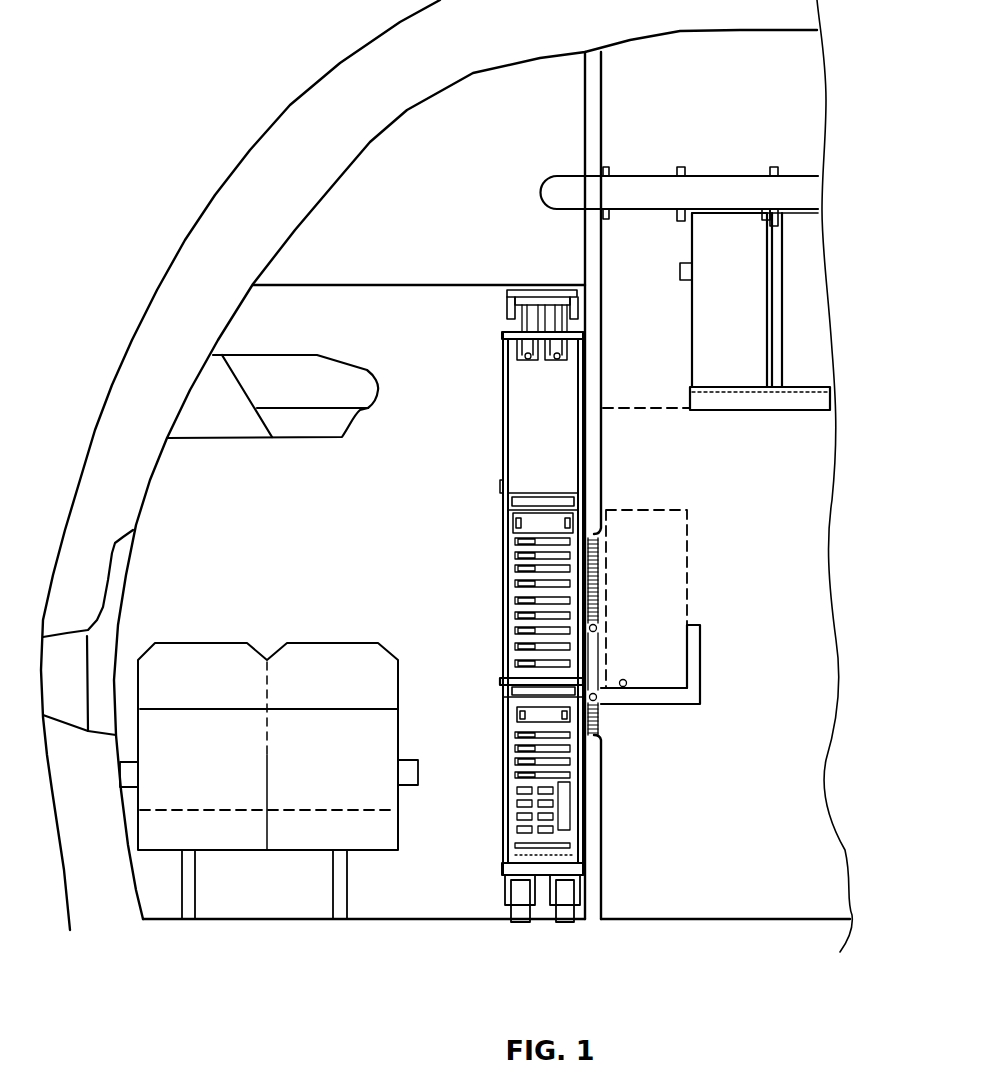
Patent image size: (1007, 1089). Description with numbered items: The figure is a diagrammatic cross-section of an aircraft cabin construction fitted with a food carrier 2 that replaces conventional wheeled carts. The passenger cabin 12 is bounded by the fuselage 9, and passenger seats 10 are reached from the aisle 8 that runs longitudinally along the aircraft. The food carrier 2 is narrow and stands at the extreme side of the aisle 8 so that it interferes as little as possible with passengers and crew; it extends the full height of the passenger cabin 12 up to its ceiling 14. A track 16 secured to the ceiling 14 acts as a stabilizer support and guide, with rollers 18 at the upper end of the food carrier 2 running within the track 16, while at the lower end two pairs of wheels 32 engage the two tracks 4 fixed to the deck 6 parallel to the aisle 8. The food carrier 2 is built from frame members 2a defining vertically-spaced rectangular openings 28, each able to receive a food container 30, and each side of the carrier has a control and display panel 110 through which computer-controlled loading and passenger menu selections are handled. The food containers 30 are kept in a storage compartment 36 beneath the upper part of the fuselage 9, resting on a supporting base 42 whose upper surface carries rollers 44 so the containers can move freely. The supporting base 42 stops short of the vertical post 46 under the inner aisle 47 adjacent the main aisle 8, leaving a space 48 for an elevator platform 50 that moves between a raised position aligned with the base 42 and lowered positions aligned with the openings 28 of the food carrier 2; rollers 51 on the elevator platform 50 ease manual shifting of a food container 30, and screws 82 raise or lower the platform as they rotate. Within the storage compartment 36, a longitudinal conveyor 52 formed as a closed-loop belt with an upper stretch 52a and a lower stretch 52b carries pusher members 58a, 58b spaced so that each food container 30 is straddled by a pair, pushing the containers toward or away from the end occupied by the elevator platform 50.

The food carrier 2 is at (501, 619).
The frame members 2a is at (503, 400).
The tracks 4 is at (520, 923).
The deck 6 is at (400, 916).
The aisle 8 is at (465, 776).
The fuselage 9 is at (628, 27).
The passenger seats 10 is at (340, 644).
The passenger cabin 12 is at (400, 488).
The ceiling 14 is at (360, 287).
The track 16 is at (530, 290).
The rollers 18 is at (507, 313).
The rectangular openings 28 is at (505, 647).
The food container 30 is at (712, 307).
The wheels 32 is at (519, 906).
The storage compartment 36 is at (632, 317).
The supporting base 42 is at (748, 403).
The rollers 44 is at (703, 385).
The vertical post 46 is at (594, 442).
The inner aisle 47 is at (718, 467).
The space 48 is at (633, 399).
The elevator platform 50 is at (677, 698).
The rollers 51 is at (623, 687).
The longitudinal conveyor 52 is at (621, 174).
The upper stretch 52a is at (775, 158).
The lower stretch 52b is at (768, 216).
The pusher members 58a is at (682, 162).
The pusher members 58b is at (678, 222).
The screws 82 is at (601, 586).
The control and display panel 110 is at (533, 491).